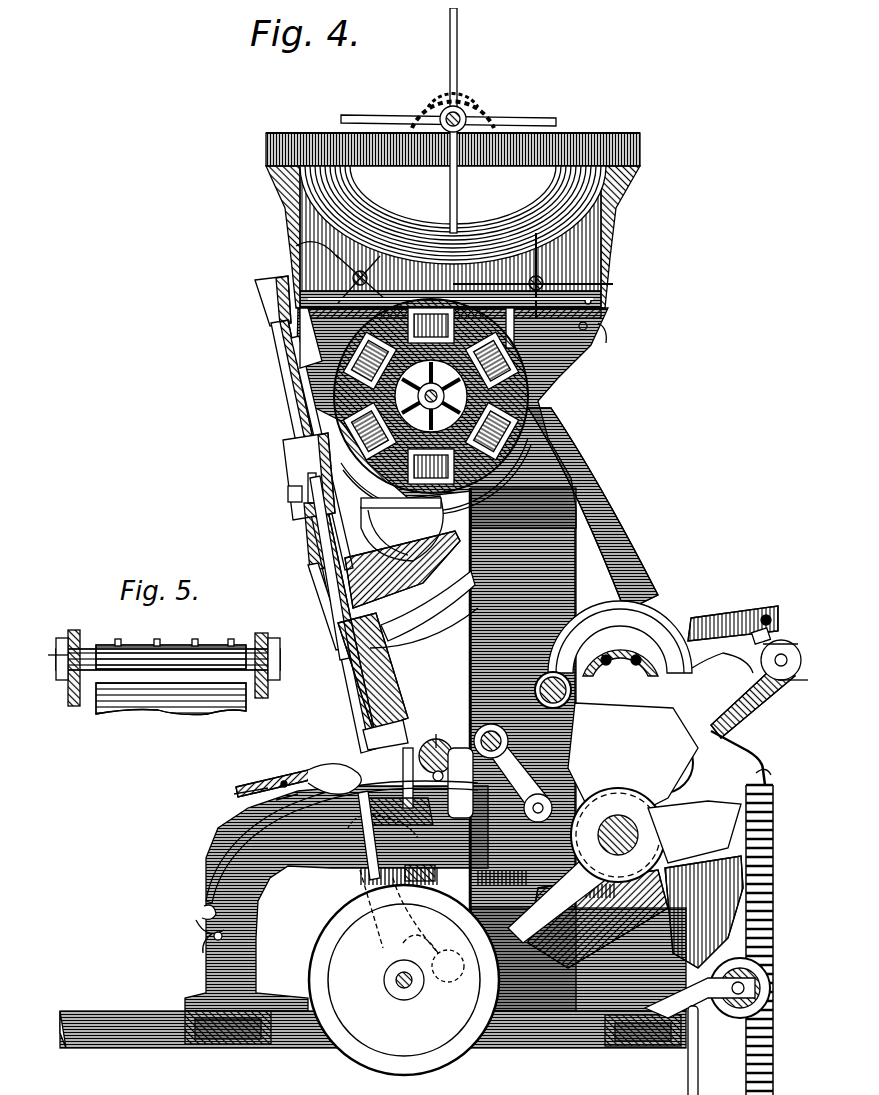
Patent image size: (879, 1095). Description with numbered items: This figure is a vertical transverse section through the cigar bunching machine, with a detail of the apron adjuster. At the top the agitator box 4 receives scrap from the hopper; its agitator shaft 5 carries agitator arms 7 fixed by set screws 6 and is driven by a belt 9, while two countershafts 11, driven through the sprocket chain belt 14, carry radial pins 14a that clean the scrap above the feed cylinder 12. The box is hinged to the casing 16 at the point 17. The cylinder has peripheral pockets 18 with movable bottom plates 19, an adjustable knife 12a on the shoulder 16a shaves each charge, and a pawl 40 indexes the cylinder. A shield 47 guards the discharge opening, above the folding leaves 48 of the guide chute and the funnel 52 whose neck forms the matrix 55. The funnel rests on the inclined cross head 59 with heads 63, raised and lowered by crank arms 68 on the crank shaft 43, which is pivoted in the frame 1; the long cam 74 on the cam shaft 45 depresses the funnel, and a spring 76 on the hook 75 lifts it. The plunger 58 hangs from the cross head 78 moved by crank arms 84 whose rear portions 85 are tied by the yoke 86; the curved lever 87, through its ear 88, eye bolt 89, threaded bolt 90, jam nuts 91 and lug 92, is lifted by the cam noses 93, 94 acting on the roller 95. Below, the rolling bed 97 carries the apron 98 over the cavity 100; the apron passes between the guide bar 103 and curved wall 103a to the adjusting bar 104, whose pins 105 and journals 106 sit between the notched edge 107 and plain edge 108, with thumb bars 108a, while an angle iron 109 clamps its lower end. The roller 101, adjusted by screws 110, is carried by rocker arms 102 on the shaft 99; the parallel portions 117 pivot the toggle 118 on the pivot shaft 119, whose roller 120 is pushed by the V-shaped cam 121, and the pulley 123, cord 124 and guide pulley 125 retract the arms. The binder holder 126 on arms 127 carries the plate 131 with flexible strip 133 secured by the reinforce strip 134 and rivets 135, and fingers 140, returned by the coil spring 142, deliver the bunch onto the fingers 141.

In FIG. 4, the frame 1 is at (468, 672).
In FIG. 4, the agitator box 4 is at (284, 232).
In FIG. 4, the agitator shaft 5 is at (465, 106).
In FIG. 4, the set screws 6 is at (408, 108).
In FIG. 4, the agitator arms 7 is at (450, 183).
In FIG. 4, the belt 9 is at (482, 480).
In FIG. 4, the countershafts 11 is at (362, 268).
In FIG. 4, the feed cylinder 12 is at (540, 402).
In FIG. 4, the adjustable knife 12a is at (292, 322).
In FIG. 4, the sprocket chain belt 14 is at (453, 97).
In FIG. 4, the radial arms or pins 14a is at (292, 240).
In FIG. 4, the casing or shell 16 is at (548, 382).
In FIG. 4, the shoulder 16a is at (285, 362).
In FIG. 4, the hinge point 17 is at (600, 292).
In FIG. 4, the longitudinal peripheral pockets 18 is at (432, 300).
In FIG. 4, the movable bottom plate 19 is at (516, 328).
In FIG. 4, the upright pawl 40 is at (622, 540).
In FIG. 4, the crank shaft 43 is at (568, 690).
In FIG. 4, the cam shaft 45 is at (618, 835).
In FIG. 4, the shield 47 is at (322, 540).
In FIG. 4, the trough shaped leaves 48 is at (402, 528).
In FIG. 4, the funnel 52 is at (402, 569).
In FIG. 4, the matrix 55 is at (350, 700).
In FIG. 4, the plunger 58 is at (345, 632).
In FIG. 4, the inclined cross head 59 is at (385, 632).
In FIG. 4, the heads 63 is at (300, 468).
In FIG. 4, the crank arms 68 is at (455, 630).
In FIG. 4, the long cam 74 is at (680, 837).
In FIG. 4, the hook 75 is at (735, 727).
In FIG. 4, the spring 76 is at (767, 936).
In FIG. 4, the cross head 78 is at (300, 500).
In FIG. 4, the crank arms 84 is at (282, 486).
In FIG. 4, the rearwardly projecting portions 85 is at (660, 690).
In FIG. 4, the U-shaped yoke or cross bar 86 is at (705, 618).
In FIG. 4, the curved lever 87 is at (650, 637).
In FIG. 4, the perforated ear 88 is at (755, 699).
In FIG. 4, the eye bolt 89 is at (782, 654).
In FIG. 4, the threaded bolt 90 is at (772, 640).
In FIG. 4, the jam nuts 91 is at (778, 648).
In FIG. 4, the ear or lug 92 is at (759, 606).
In FIG. 4, the cam nose 93 is at (663, 924).
In FIG. 4, the cam nose 94 is at (520, 912).
In FIG. 4, the antifriction roller 95 is at (688, 766).
In FIG. 4, the rolling bed 97 is at (258, 902).
In FIG. 4, the bunch rolling apron 98 is at (245, 830).
In FIG. 5, the bunch rolling apron 98 is at (190, 706).
In FIG. 4, the transverse shaft 99 is at (393, 980).
In FIG. 4, the cavity or depression 100 is at (398, 770).
In FIG. 4, the apron actuating roller 101 is at (440, 740).
In FIG. 4, the rocker arms 102 is at (455, 764).
In FIG. 4, the guide bar 103 is at (455, 795).
In FIG. 4, the curved wall or end 103a is at (403, 801).
In FIG. 4, the apron adjusting bar 104 is at (352, 868).
In FIG. 5, the apron adjusting bar 104 is at (130, 668).
In FIG. 5, the pins 105 is at (170, 634).
In FIG. 5, the angular journals 106 is at (64, 690).
In FIG. 5, the notched edge 107 is at (86, 642).
In FIG. 5, the plain edge 108 is at (64, 662).
In FIG. 5, the thumb bars 108a is at (60, 651).
In FIG. 4, the angle iron 109 is at (200, 897).
In FIG. 4, the screws 110 is at (436, 731).
In FIG. 4, the parallel portions 117 is at (448, 966).
In FIG. 4, the toggle 118 is at (500, 878).
In FIG. 4, the pivot shaft 119 is at (513, 766).
In FIG. 4, the anti-friction roller 120 is at (575, 782).
In FIG. 4, the V-shaped cam 121 is at (598, 919).
In FIG. 4, the pulley 123 is at (435, 1050).
In FIG. 4, the cord 124 is at (770, 1043).
In FIG. 4, the guide pulley 125 is at (730, 1008).
In FIG. 4, the binder holder 126 is at (269, 771).
In FIG. 4, the arms 127 is at (352, 868).
In FIG. 4, the binder supporting plate 131 is at (235, 780).
In FIG. 4, the flexible strip 133 is at (330, 765).
In FIG. 4, the reinforce strip 134 is at (272, 792).
In FIG. 4, the screws or rivets 135 is at (297, 790).
In FIG. 4, the upwardly curved fingers 140 is at (190, 914).
In FIG. 4, the upwardly curved fingers 141 is at (204, 926).
In FIG. 4, the coil spring 142 is at (376, 932).